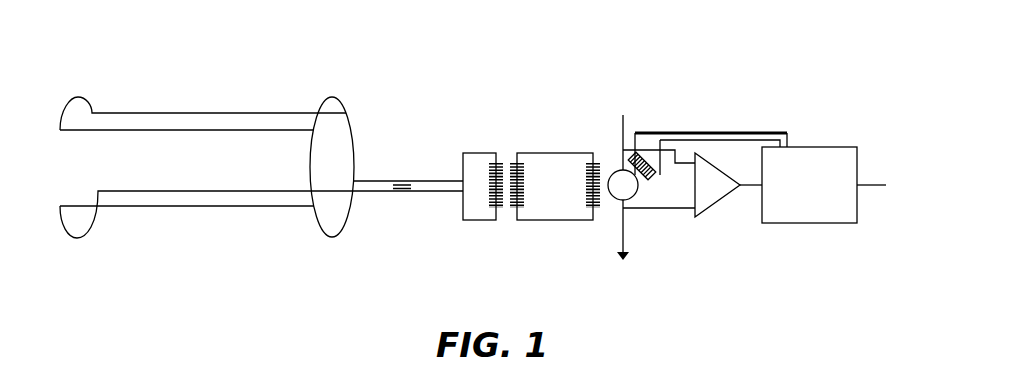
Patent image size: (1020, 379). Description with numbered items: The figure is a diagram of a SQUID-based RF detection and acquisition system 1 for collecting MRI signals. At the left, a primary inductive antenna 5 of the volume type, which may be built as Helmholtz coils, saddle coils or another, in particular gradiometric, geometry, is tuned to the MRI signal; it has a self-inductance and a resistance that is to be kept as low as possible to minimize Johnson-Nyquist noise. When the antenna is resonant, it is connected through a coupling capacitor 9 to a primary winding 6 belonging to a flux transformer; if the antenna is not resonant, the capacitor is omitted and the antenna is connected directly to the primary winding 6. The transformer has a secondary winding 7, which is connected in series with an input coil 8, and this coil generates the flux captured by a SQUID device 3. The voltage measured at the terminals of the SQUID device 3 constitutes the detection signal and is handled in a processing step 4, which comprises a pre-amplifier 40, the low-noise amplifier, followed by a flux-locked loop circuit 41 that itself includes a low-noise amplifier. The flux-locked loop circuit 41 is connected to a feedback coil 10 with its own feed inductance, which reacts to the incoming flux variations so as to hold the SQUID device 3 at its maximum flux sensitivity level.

The SQUID-based RF detection and acquisition system 1 is at (432, 74).
The primary inductive antenna 5 is at (200, 113).
The coupling capacitor 9 is at (402, 188).
The primary winding 6 is at (490, 210).
The secondary winding 7 is at (518, 163).
The input coil 8 is at (590, 208).
The SQUID device 3 is at (617, 202).
The feedback coil 10 is at (650, 165).
The step of processing the secondary detection signal 4 is at (746, 117).
The pre-amplifier 40 is at (712, 205).
The flux-locked loop circuit 41 is at (800, 147).